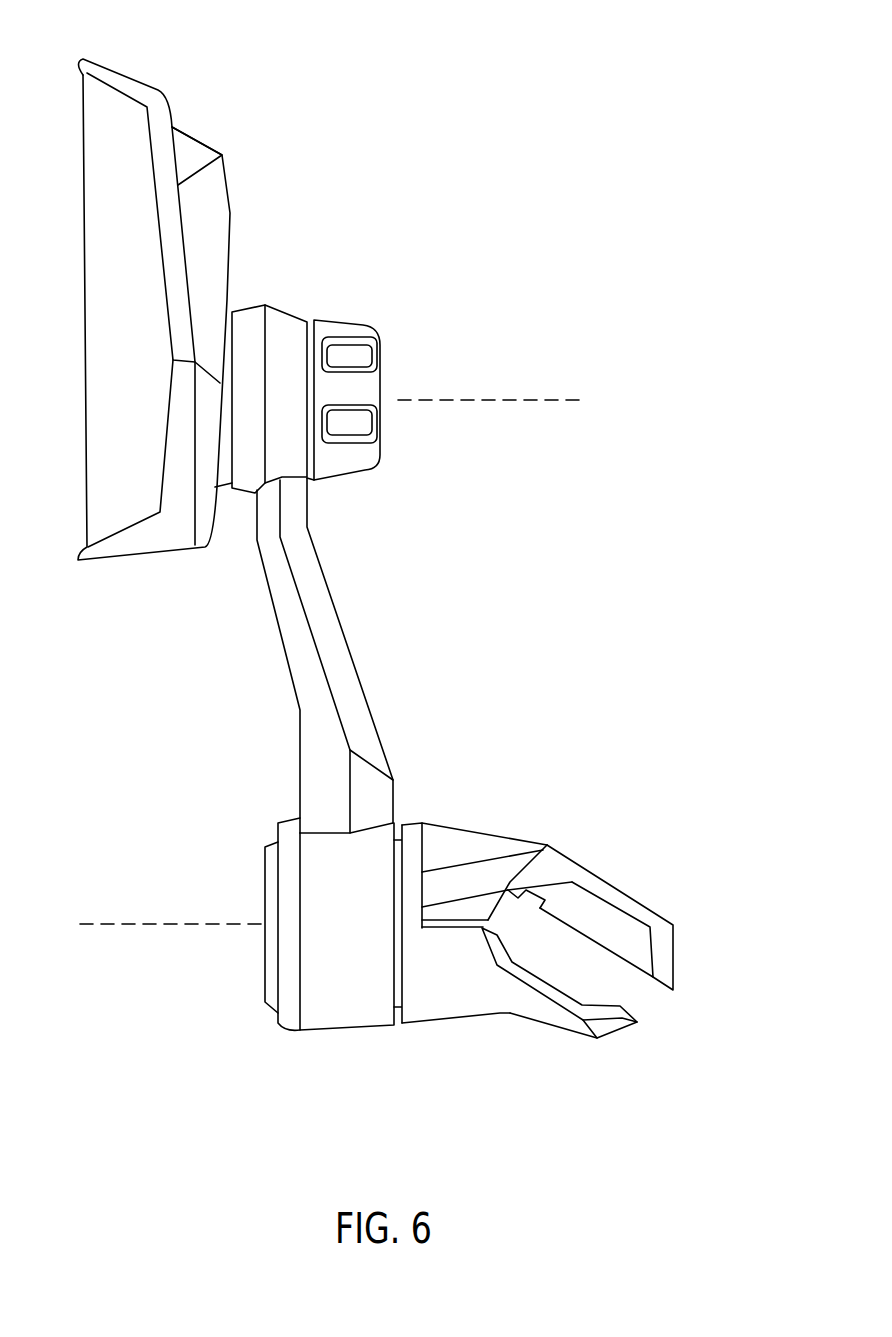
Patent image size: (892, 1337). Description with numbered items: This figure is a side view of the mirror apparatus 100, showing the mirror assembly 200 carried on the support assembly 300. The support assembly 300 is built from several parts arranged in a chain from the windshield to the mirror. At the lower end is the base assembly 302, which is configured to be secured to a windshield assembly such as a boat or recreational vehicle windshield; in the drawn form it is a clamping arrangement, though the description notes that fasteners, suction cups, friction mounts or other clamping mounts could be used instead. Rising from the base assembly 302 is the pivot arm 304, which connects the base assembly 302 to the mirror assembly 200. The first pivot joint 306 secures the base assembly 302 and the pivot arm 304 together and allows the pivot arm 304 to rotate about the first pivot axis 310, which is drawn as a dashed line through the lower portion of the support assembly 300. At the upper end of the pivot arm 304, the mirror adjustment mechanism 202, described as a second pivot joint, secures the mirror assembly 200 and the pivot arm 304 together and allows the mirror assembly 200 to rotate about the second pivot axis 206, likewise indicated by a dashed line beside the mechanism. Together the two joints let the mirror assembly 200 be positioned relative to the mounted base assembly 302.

The mirror apparatus 100 is at (567, 128).
The mirror assembly 200 is at (146, 342).
The mirror adjustment mechanism 202 is at (380, 447).
The second pivot axis 206 is at (467, 400).
The support assembly 300 is at (165, 780).
The base assembly 302 is at (613, 1035).
The pivot arm 304 is at (282, 640).
The first pivot joint 306 is at (267, 900).
The first pivot axis 310 is at (130, 925).